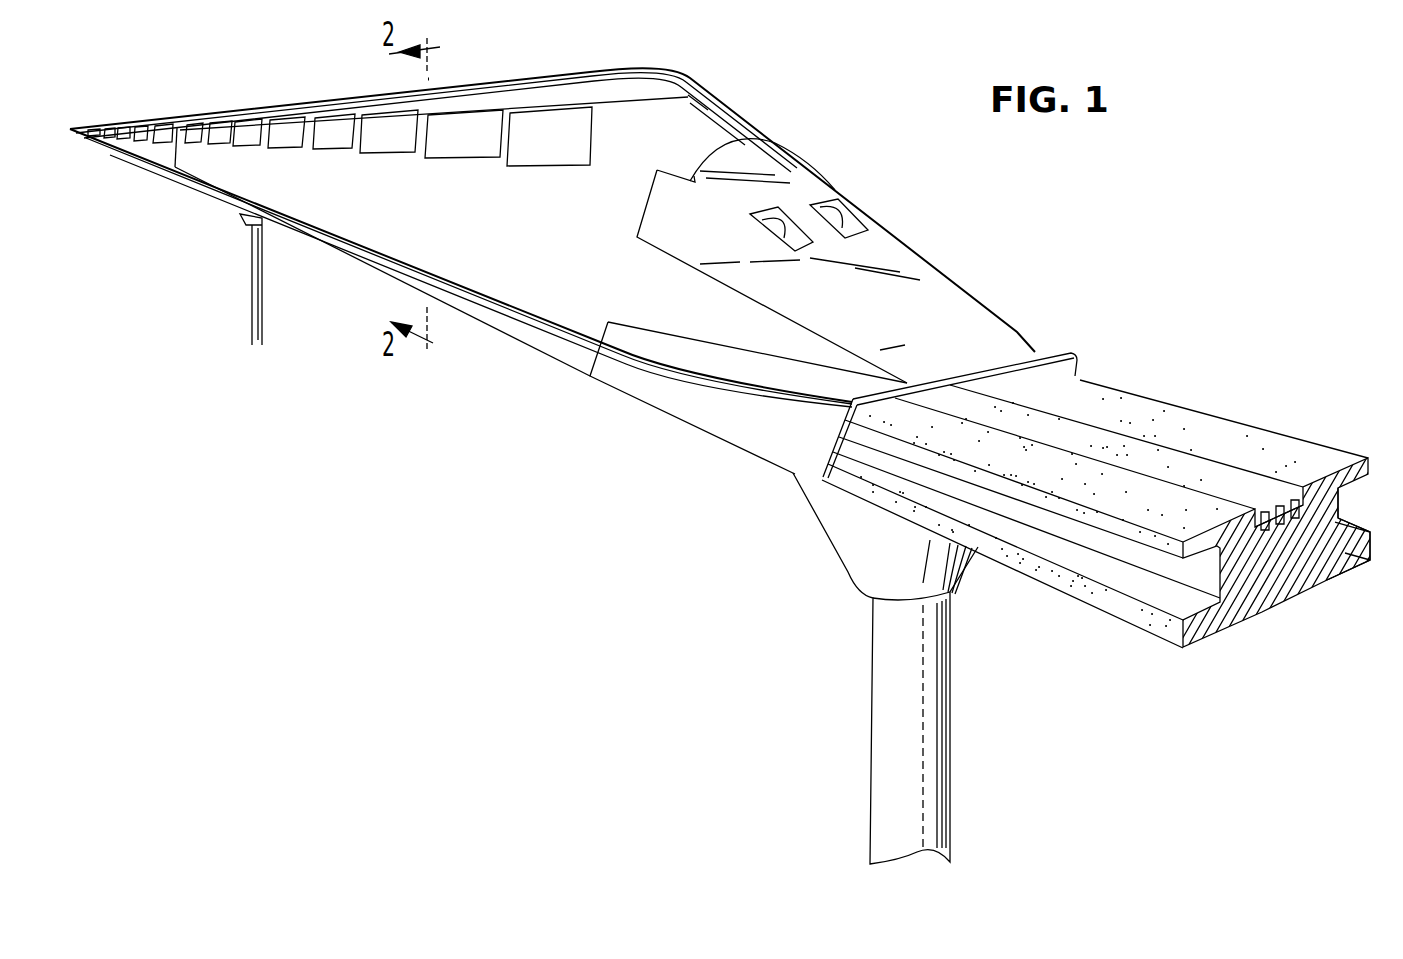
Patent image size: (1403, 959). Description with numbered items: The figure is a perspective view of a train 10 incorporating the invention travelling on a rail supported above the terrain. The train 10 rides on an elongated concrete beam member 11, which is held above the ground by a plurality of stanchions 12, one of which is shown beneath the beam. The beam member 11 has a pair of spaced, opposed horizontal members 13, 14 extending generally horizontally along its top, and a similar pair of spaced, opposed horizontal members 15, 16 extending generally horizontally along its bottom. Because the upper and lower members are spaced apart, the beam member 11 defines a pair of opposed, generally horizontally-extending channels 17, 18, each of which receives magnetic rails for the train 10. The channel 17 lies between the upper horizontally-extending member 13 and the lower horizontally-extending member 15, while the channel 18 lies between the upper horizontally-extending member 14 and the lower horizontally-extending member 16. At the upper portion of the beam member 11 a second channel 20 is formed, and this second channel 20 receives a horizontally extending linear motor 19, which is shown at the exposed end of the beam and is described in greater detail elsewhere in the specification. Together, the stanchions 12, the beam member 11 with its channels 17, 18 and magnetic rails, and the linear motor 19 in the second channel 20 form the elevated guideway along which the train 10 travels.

The train 10 is at (752, 97).
The beam member 11 is at (1220, 399).
The stanchions 12 is at (952, 741).
The upper horizontally-extending member 13 is at (967, 456).
The upper horizontally-extending member 14 is at (1160, 421).
The lower horizontally-extending member 15 is at (1208, 648).
The lower horizontally-extending member 16 is at (1348, 572).
The channel 17 is at (1179, 596).
The channel 18 is at (1362, 501).
The linear motor 19 is at (1270, 476).
The second channel 20 is at (1283, 580).